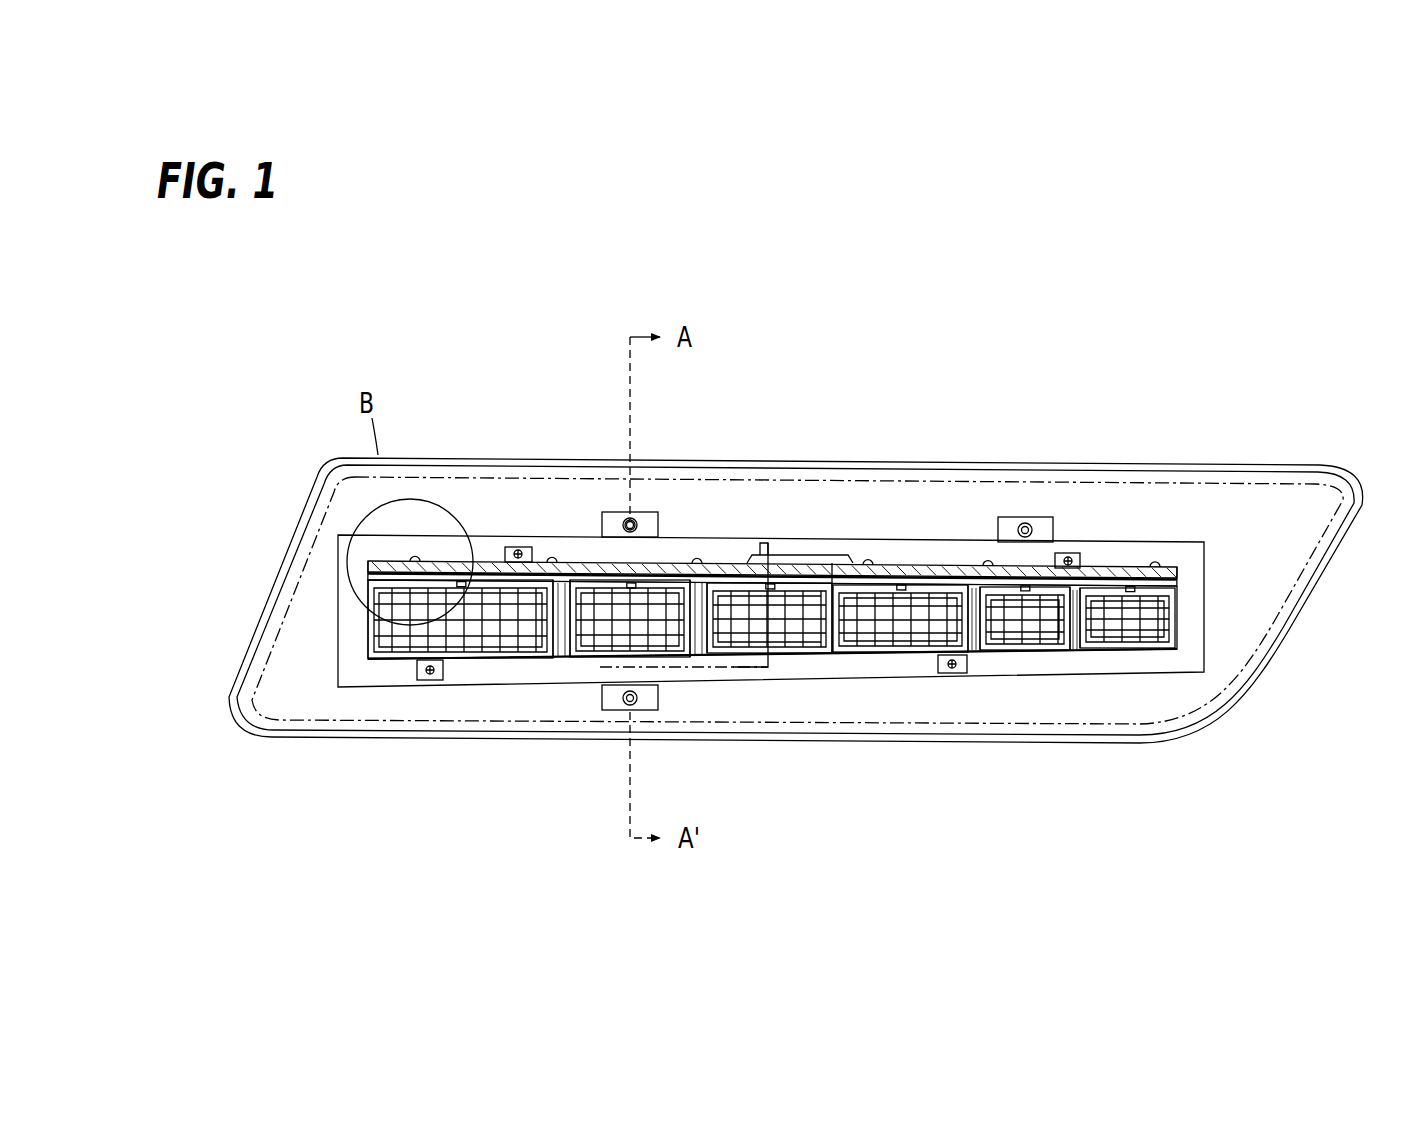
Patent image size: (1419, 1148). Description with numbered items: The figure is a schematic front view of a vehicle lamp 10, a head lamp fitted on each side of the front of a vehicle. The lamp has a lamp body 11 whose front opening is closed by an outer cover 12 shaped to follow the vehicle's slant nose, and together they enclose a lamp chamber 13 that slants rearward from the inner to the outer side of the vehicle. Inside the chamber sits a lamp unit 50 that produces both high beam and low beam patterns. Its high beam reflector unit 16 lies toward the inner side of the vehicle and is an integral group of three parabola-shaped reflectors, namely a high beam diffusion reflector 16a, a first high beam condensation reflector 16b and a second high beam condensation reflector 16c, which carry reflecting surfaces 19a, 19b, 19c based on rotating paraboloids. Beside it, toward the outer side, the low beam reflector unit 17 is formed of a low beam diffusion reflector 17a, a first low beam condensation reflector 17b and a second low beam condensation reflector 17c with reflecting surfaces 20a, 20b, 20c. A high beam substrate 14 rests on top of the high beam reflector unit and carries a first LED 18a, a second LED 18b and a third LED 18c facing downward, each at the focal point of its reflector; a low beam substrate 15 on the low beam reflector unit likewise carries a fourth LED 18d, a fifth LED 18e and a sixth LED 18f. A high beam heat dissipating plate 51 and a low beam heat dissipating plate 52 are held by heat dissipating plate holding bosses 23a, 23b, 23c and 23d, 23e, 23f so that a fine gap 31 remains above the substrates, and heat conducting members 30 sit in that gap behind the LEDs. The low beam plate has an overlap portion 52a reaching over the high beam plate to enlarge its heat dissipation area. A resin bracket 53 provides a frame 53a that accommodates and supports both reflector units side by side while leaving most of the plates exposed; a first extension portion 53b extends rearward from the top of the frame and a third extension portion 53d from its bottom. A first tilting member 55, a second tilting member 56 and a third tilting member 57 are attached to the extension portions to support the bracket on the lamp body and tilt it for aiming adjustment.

The vehicle lamp 10 is at (322, 427).
The lamp body 11 is at (290, 522).
The outer cover 12 is at (300, 478).
The lamp chamber 13 is at (333, 509).
The high beam substrate 14 is at (358, 580).
The low beam substrate 15 is at (1178, 584).
The high beam reflector unit 16 is at (524, 689).
The high beam diffusion reflector 16a is at (397, 655).
The first high beam condensation reflector 16b is at (578, 645).
The second high beam condensation reflector 16c is at (745, 643).
The low beam reflector unit 17 is at (1089, 692).
The low beam diffusion reflector 17a is at (895, 650).
The first low beam condensation reflector 17b is at (1000, 650).
The second low beam condensation reflector 17c is at (1110, 650).
The first LED 18a is at (490, 575).
The second LED 18b is at (660, 580).
The third LED 18c is at (800, 585).
The fourth LED 18d is at (945, 585).
The fifth LED 18e is at (1060, 590).
The sixth LED 18f is at (1120, 592).
The reflecting surface 19a is at (473, 640).
The reflecting surface 19b is at (660, 640).
The reflecting surface 19c is at (775, 640).
The reflecting surface 20a is at (905, 640).
The reflecting surface 20b is at (1020, 640).
The reflecting surface 20c is at (1120, 640).
The heat dissipating plate holding boss 23a is at (460, 580).
The heat dissipating plate holding boss 23b is at (630, 580).
The heat dissipating plate holding boss 23c is at (769, 580).
The heat dissipating plate holding boss 23d is at (901, 580).
The heat dissipating plate holding boss 23e is at (1025, 580).
The heat dissipating plate holding boss 23f is at (1131, 580).
The heat conducting member 30 is at (416, 556).
The gap 31 is at (358, 567).
The lamp unit 50 is at (1092, 530).
The high beam heat dissipating plate 51 is at (770, 550).
The low beam heat dissipating plate 52 is at (834, 545).
The overlap portion 52a is at (850, 558).
The bracket 53 is at (518, 536).
The frame 53a is at (530, 556).
The first extension portion 53b is at (636, 522).
The third extension portion 53d is at (635, 702).
The first tilting member 55 is at (640, 518).
The second tilting member 56 is at (1020, 523).
The third tilting member 57 is at (622, 706).